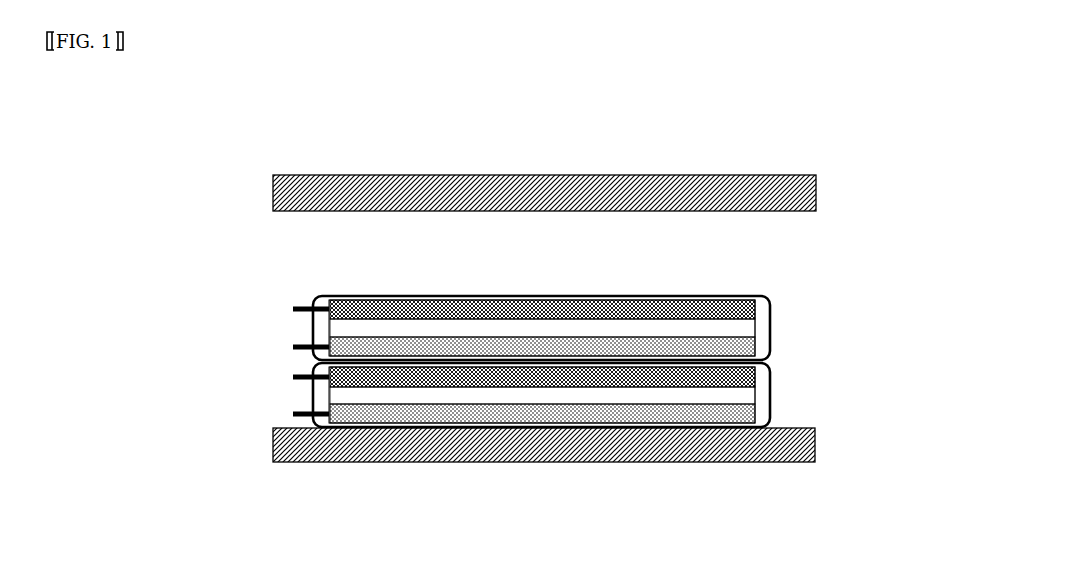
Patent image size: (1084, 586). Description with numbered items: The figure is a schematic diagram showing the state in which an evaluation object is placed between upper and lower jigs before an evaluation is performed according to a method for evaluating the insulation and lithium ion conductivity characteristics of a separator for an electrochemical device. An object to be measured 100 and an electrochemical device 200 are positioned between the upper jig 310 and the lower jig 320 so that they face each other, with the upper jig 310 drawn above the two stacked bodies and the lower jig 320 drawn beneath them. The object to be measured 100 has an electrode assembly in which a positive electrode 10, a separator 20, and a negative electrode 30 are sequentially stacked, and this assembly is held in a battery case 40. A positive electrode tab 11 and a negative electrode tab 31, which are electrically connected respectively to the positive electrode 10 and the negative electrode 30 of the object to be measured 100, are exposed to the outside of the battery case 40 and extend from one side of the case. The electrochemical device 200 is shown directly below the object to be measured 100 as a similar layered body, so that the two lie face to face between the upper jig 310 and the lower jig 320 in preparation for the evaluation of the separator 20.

The object to be measured 100 is at (566, 320).
The positive electrode 10 is at (755, 306).
The separator 20 is at (755, 329).
The negative electrode 30 is at (755, 350).
The battery case 40 is at (765, 296).
The positive electrode tab 11 is at (293, 308).
The negative electrode tab 31 is at (293, 347).
The electrochemical device 200 is at (313, 395).
The upper jig 310 is at (816, 192).
The lower jig 320 is at (815, 450).